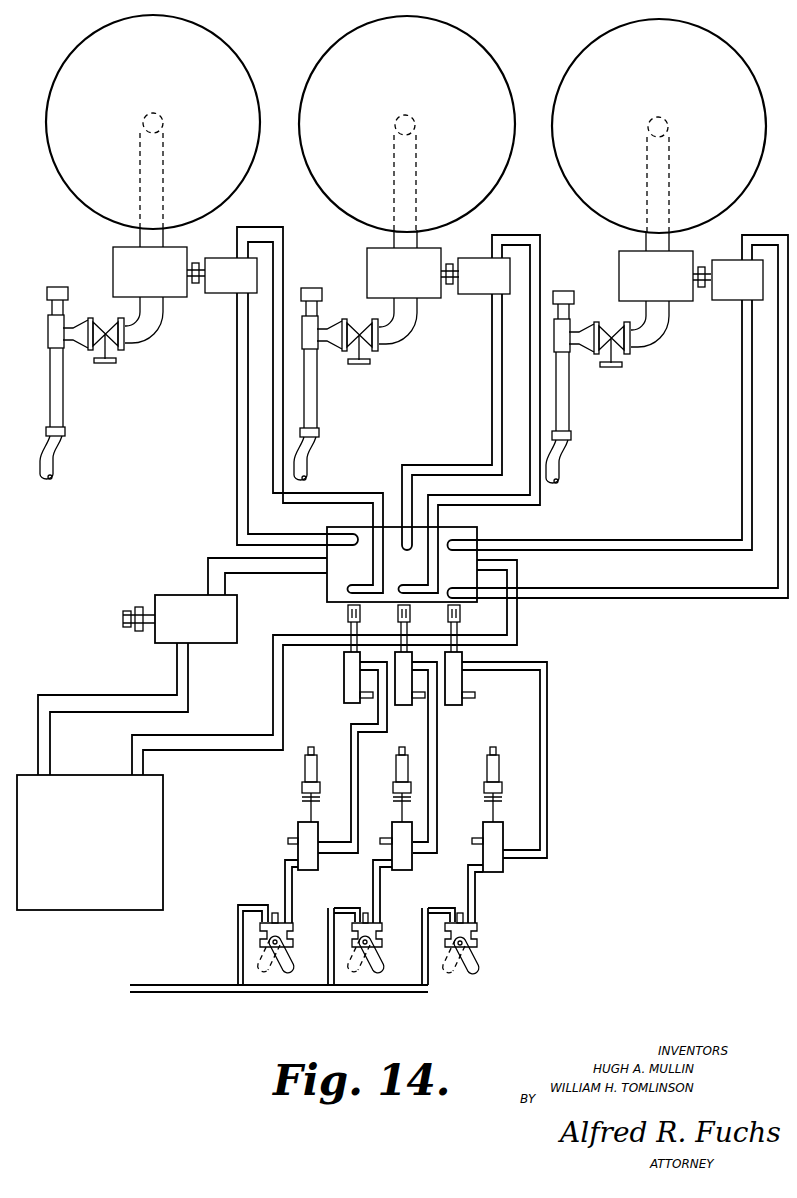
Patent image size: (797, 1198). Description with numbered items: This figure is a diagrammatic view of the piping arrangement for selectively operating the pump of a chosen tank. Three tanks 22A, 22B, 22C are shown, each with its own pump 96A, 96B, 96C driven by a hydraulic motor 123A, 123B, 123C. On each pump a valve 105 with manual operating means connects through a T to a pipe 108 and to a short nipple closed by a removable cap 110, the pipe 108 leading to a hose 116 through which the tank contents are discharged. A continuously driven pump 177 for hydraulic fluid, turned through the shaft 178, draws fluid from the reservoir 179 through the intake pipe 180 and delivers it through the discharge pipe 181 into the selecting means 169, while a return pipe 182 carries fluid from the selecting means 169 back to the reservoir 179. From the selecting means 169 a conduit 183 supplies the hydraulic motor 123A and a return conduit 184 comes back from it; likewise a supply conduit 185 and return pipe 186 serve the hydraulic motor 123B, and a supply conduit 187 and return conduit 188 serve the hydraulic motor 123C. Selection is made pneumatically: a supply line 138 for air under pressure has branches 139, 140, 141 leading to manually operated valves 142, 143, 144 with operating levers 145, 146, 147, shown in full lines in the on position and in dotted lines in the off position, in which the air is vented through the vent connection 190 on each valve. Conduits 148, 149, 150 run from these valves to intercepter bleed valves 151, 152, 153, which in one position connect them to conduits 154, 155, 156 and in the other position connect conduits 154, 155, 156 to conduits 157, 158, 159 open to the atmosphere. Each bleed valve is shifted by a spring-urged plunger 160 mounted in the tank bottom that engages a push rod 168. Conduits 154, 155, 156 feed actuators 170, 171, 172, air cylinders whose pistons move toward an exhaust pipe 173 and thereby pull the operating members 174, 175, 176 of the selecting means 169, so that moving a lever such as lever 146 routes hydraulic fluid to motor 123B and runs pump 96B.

The tank 22A is at (237, 84).
The tank 22B is at (456, 42).
The tank 22C is at (703, 46).
The pump 96A is at (128, 256).
The pump 96B is at (382, 256).
The pump 96C is at (634, 258).
The removable cap 110 is at (61, 292).
The valve 105 is at (118, 349).
The pipe 108 is at (56, 412).
The hose 116 is at (53, 452).
The hydraulic motor 123A is at (226, 294).
The hydraulic motor 123B is at (480, 296).
The hydraulic motor 123C is at (718, 293).
The conduit 183 is at (236, 434).
The return conduit 184 is at (333, 495).
The supply conduit 185 is at (491, 423).
The return pipe 186 is at (533, 496).
The supply conduit 187 is at (744, 421).
The return conduit 188 is at (745, 595).
The selecting means 169 is at (445, 532).
The discharge pipe 181 is at (285, 565).
The pump for hydraulic fluid 177 is at (171, 598).
The shaft 178 is at (124, 618).
The intake pipe 180 is at (72, 702).
The reservoir 179 is at (152, 821).
The return pipe 182 is at (514, 618).
The operating member 174 is at (348, 614).
The operating member 175 is at (404, 621).
The operating member 176 is at (454, 621).
The actuator 170 is at (344, 681).
The actuator 171 is at (401, 706).
The actuator 172 is at (463, 684).
The exhaust pipe 173 is at (366, 699).
The conduit 154 is at (353, 773).
The conduit 155 is at (436, 778).
The conduit 156 is at (548, 808).
The plunger 160 is at (302, 768).
The push rod 168 is at (302, 799).
The intercepter bleed valve 151 is at (298, 832).
The intercepter bleed valve 152 is at (405, 867).
The intercepter bleed valve 153 is at (496, 867).
The conduit 157 is at (288, 841).
The conduit 158 is at (381, 839).
The conduit 159 is at (473, 839).
The conduit 148 is at (285, 882).
The conduit 149 is at (373, 882).
The conduit 150 is at (476, 895).
The vent connection 190 is at (272, 913).
The manually operated valve 142 is at (293, 936).
The manually operated valve 143 is at (382, 936).
The manually operated valve 144 is at (478, 938).
The operating lever 145 is at (290, 961).
The operating lever 146 is at (380, 961).
The operating lever 147 is at (483, 966).
The branch 139 is at (238, 950).
The branch 140 is at (331, 975).
The branch 141 is at (428, 975).
The supply line 138 is at (185, 993).